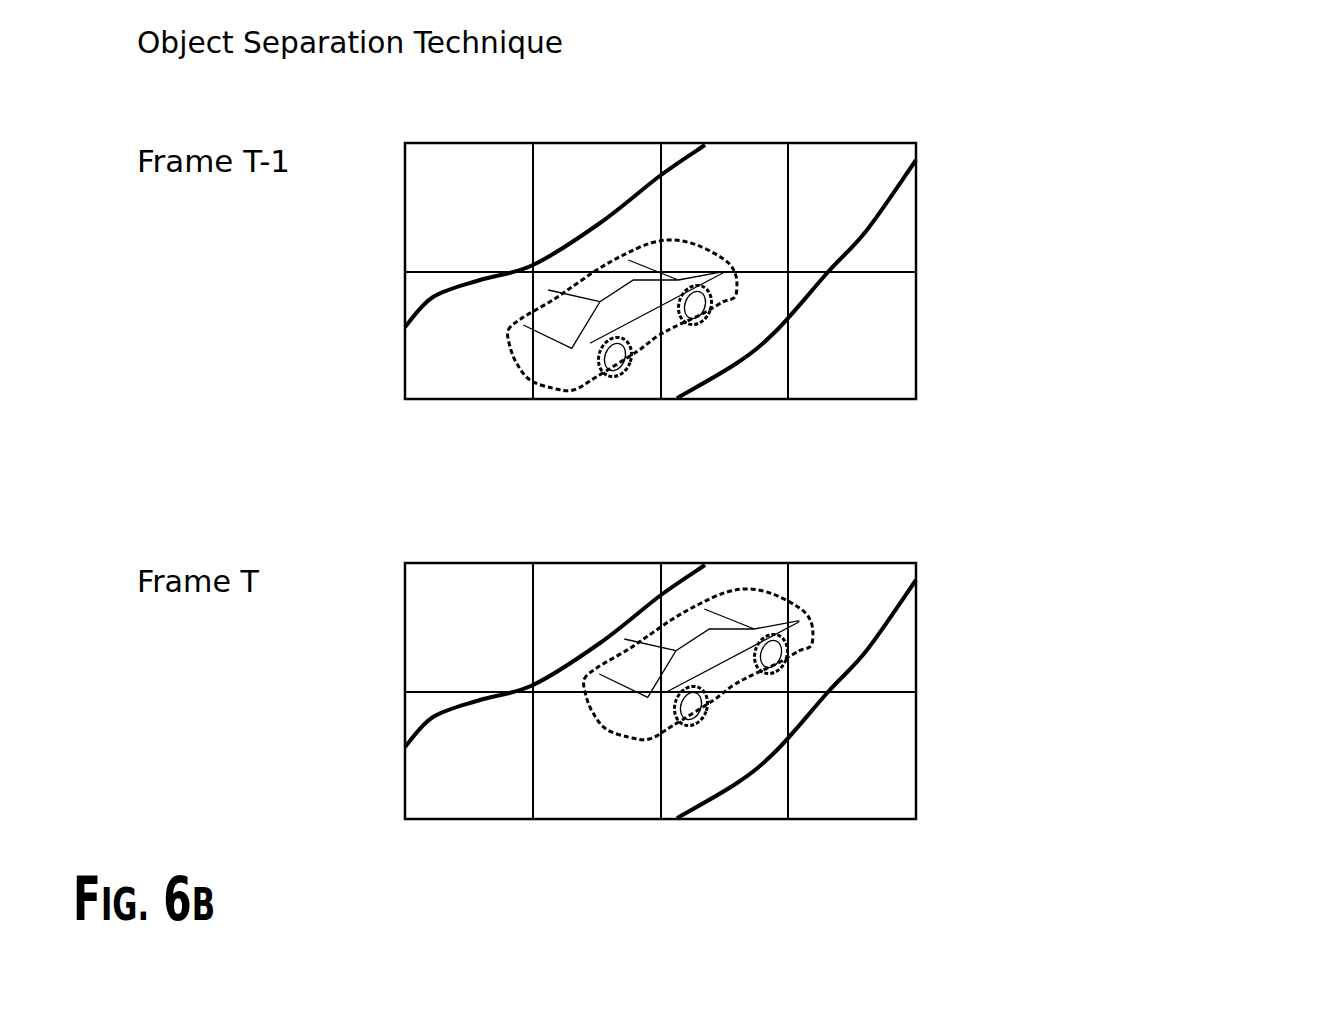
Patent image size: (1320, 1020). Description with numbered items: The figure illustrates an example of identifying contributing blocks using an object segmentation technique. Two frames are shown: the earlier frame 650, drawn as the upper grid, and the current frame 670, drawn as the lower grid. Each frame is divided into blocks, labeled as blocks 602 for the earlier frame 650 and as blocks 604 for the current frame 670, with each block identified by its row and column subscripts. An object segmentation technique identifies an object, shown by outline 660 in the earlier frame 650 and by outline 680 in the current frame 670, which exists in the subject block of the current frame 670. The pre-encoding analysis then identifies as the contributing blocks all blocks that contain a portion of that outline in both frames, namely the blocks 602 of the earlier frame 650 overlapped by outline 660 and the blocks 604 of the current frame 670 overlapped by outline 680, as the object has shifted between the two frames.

The blocks of frame T-1 602 is at (660, 275).
The blocks of frame T 604 is at (660, 695).
The frame T-1 650 is at (834, 275).
The outline 660 is at (727, 302).
The frame T 670 is at (834, 695).
The outline 680 is at (717, 698).